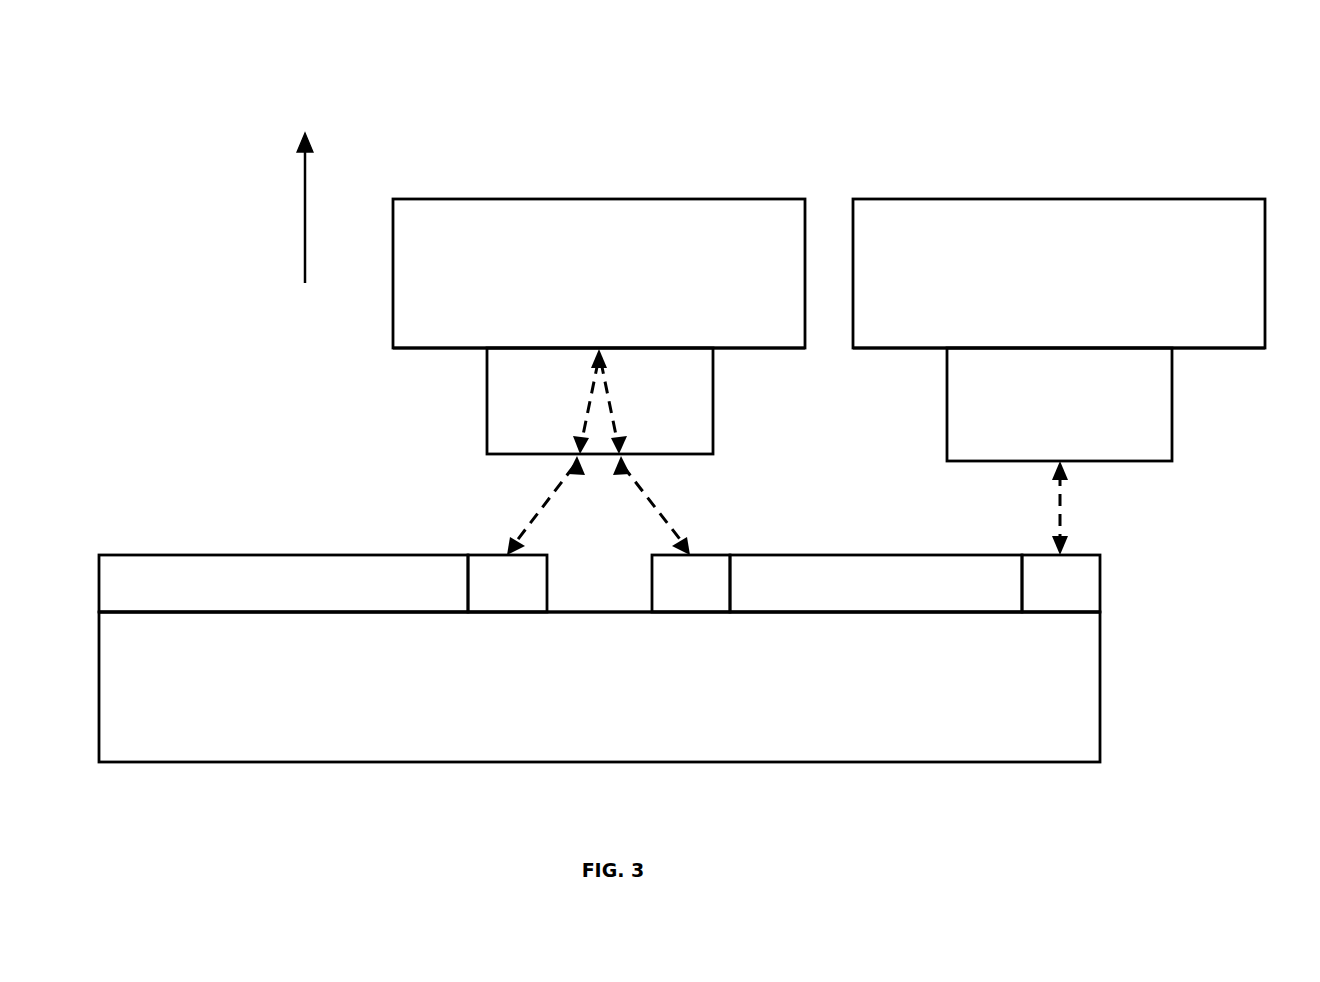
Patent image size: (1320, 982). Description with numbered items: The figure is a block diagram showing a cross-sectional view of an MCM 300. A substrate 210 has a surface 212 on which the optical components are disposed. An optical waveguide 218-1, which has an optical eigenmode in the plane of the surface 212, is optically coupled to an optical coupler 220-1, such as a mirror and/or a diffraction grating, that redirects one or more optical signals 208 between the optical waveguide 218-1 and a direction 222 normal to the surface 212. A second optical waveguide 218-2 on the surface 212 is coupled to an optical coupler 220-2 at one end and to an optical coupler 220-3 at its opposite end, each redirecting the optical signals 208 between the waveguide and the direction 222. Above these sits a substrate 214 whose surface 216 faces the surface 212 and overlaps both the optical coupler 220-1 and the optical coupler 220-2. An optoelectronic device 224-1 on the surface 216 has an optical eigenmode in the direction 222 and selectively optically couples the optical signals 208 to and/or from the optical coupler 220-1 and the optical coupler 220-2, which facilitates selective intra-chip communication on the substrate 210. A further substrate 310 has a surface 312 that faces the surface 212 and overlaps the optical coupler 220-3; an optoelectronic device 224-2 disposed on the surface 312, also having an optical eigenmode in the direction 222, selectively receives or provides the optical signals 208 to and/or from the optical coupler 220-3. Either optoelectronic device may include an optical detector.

The MCM 300 is at (1120, 108).
The direction 222 is at (305, 240).
The substrate 214 is at (599, 273).
The surface 216 is at (430, 348).
The optoelectronic device 224-1 is at (533, 393).
The substrate 310 is at (1059, 273).
The surface 312 is at (928, 348).
The optoelectronic device 224-2 is at (1059, 404).
The substrate 210 is at (599, 687).
The surface 212 is at (383, 612).
The optical waveguide 218-1 is at (338, 580).
The optical waveguide 218-2 is at (882, 572).
The optical coupler 220-1 is at (525, 590).
The optical coupler 220-2 is at (698, 583).
The optical coupler 220-3 is at (1067, 580).
The optical signals 208 is at (1060, 525).